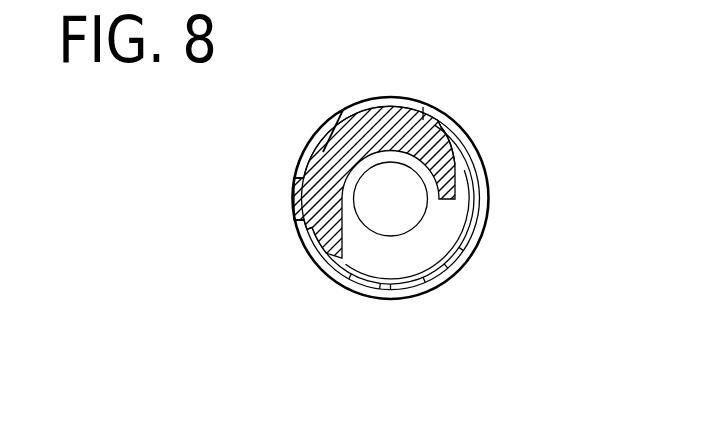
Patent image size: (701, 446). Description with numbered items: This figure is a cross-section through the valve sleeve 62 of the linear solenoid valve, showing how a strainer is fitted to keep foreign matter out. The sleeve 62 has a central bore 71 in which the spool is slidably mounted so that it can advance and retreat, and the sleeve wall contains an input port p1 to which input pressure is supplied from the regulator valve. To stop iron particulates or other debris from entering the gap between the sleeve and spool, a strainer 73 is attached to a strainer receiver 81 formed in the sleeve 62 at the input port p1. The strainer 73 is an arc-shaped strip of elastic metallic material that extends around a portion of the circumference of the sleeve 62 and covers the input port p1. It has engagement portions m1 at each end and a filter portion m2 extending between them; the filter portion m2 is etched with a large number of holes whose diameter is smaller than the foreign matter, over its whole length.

The sleeve 62 is at (400, 91).
The central bore 71 is at (405, 215).
The strainer 73 is at (462, 266).
The strainer receiver 81 is at (310, 193).
The engagement portion m1 is at (436, 126).
The filter portion m2 is at (390, 290).
The input port p1 is at (362, 262).